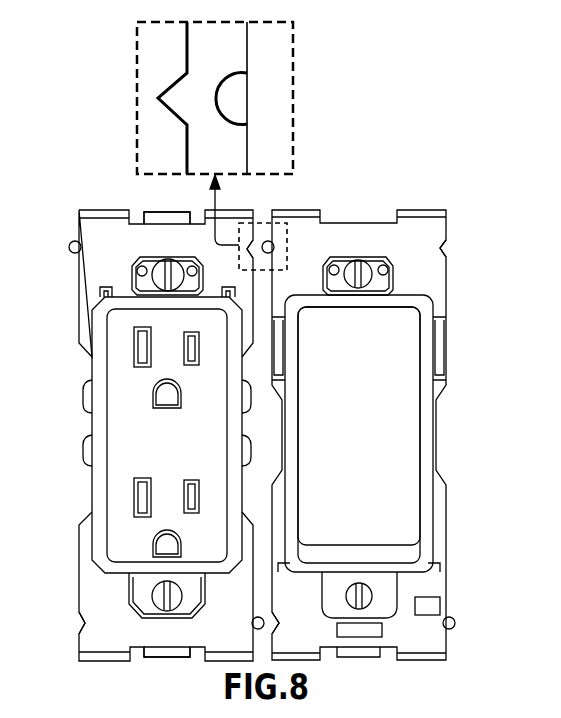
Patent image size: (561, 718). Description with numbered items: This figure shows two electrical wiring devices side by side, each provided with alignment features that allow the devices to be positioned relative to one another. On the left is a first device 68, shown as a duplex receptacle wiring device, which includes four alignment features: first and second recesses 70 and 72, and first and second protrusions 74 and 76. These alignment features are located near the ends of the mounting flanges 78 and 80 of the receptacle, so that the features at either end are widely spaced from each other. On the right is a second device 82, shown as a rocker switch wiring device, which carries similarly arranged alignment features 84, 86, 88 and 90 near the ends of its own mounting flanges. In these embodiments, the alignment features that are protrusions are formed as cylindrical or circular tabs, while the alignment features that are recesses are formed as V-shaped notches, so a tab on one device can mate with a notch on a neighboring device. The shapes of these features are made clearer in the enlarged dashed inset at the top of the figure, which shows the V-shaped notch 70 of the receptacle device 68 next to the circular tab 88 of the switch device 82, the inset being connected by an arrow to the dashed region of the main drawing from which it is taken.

The first device 68 is at (118, 207).
The first recess 70 is at (247, 252).
The second recess 72 is at (78, 623).
The first protrusion 74 is at (69, 247).
The second protrusion 76 is at (252, 623).
The mounting flange 78 is at (168, 240).
The mounting flange 80 is at (167, 638).
The second device 82 is at (412, 207).
The alignment feature 84 is at (449, 247).
The alignment feature 86 is at (279, 623).
The alignment feature 88 is at (276, 247).
The alignment feature 90 is at (456, 623).